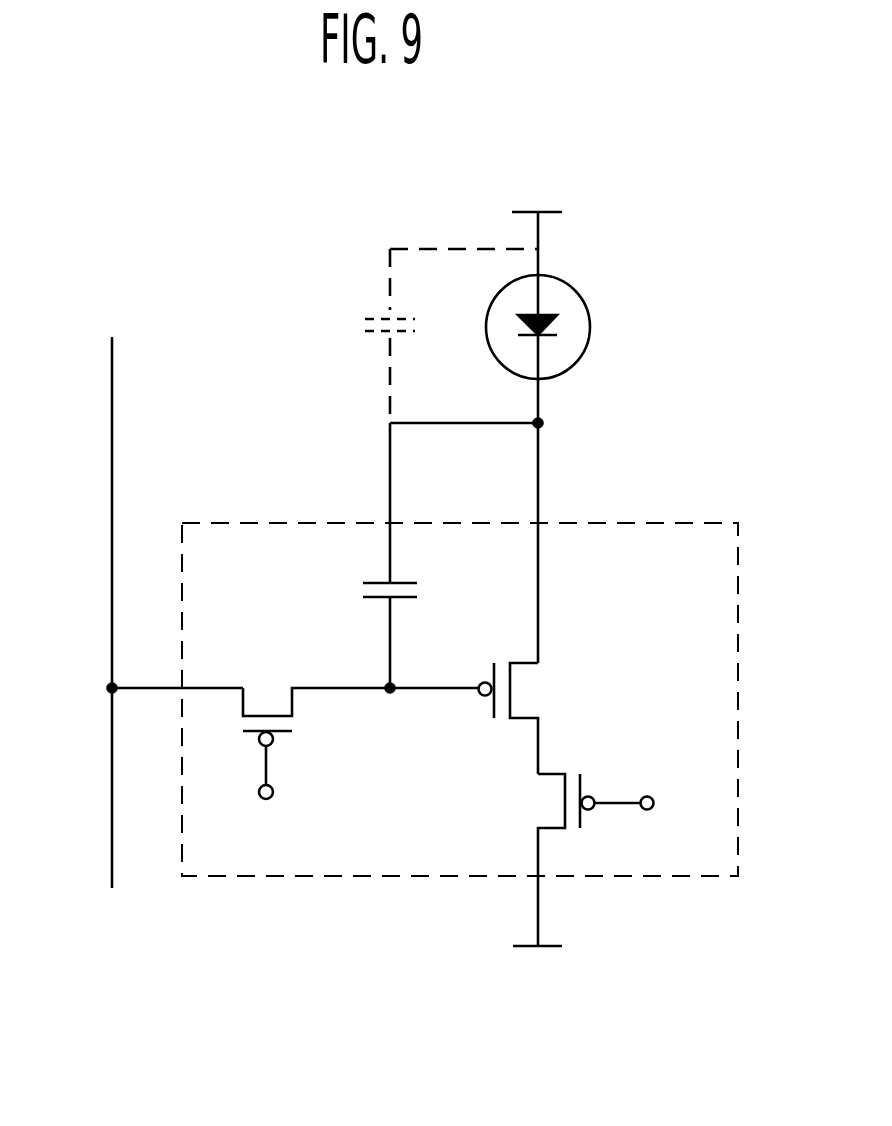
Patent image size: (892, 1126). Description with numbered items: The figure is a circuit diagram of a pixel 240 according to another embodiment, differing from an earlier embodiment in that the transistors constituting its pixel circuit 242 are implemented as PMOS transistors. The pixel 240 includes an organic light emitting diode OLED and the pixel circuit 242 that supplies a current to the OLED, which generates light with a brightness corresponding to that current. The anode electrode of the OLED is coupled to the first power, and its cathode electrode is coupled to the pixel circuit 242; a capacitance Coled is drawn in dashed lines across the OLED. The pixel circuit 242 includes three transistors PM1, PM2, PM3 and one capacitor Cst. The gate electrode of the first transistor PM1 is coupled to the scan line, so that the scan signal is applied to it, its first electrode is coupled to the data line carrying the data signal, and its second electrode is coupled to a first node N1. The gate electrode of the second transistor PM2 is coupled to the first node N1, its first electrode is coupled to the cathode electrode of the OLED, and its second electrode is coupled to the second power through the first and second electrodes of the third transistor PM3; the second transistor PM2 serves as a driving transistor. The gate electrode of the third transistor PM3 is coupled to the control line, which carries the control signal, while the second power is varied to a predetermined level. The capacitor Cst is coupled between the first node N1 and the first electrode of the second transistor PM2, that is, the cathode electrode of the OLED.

The pixel 240 is at (644, 148).
The pixel circuit 242 is at (644, 522).
The first transistor PM1 is at (346, 744).
The second transistor PM2 is at (531, 718).
The third transistor PM3 is at (606, 856).
The capacitor Cst is at (415, 555).
The OLED parasitic capacitor Coled is at (415, 336).
The organic light emitting diode OLED is at (553, 327).
The first node N1 is at (396, 711).